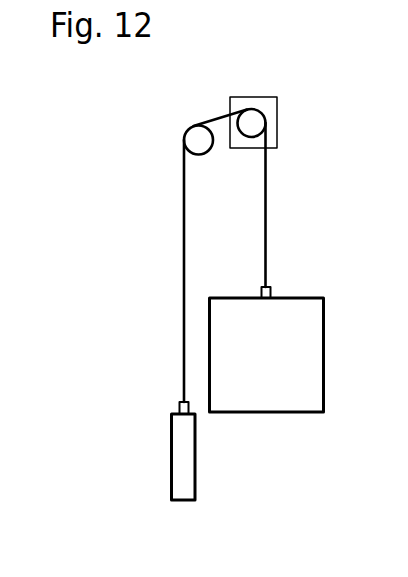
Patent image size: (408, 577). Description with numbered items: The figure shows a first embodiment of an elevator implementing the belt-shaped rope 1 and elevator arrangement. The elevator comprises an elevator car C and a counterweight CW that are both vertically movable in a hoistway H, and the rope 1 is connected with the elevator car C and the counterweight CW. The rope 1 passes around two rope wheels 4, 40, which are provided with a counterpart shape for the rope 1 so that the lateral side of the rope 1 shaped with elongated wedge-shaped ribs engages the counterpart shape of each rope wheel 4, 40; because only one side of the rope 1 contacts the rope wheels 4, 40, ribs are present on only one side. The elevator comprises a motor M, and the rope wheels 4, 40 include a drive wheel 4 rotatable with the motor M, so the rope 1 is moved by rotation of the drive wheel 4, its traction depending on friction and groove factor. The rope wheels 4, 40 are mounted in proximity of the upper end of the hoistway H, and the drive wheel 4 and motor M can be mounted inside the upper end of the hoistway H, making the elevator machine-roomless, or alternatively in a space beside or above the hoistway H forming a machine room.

The rope 1 is at (209, 262).
The rope wheel 40 is at (204, 105).
The drive wheel 4 is at (259, 88).
The motor M is at (289, 123).
The hoistway H is at (222, 239).
The elevator car C is at (283, 375).
The counterweight CW is at (223, 457).